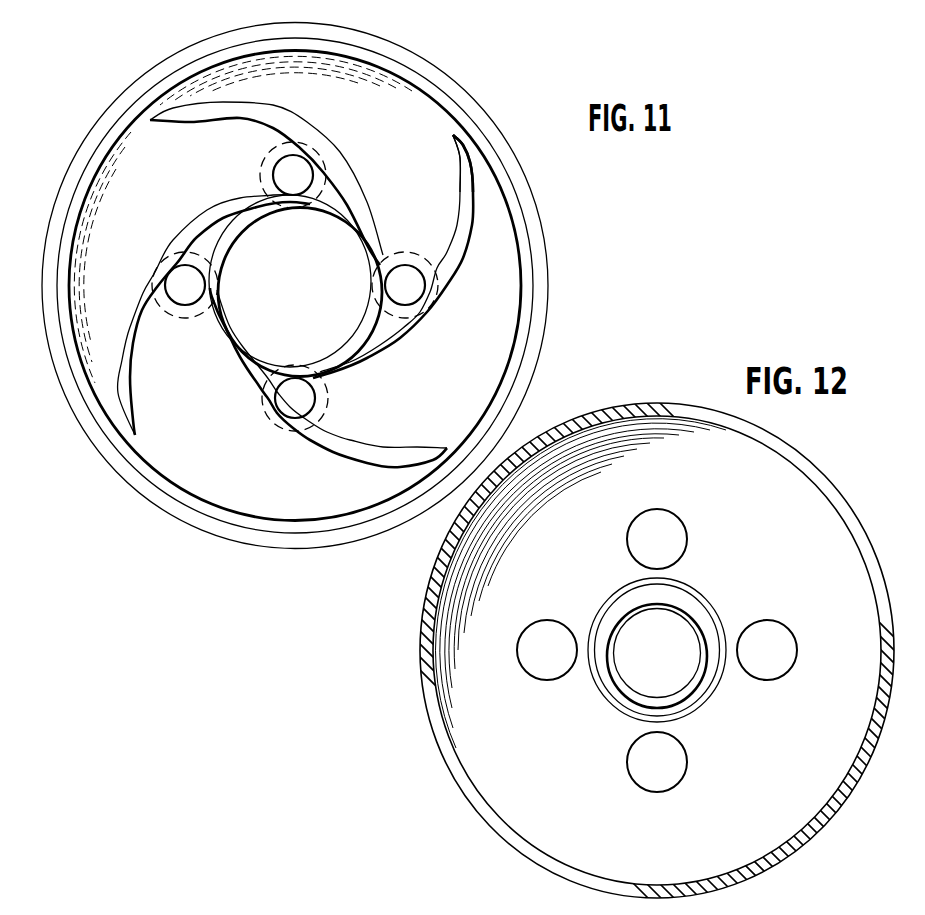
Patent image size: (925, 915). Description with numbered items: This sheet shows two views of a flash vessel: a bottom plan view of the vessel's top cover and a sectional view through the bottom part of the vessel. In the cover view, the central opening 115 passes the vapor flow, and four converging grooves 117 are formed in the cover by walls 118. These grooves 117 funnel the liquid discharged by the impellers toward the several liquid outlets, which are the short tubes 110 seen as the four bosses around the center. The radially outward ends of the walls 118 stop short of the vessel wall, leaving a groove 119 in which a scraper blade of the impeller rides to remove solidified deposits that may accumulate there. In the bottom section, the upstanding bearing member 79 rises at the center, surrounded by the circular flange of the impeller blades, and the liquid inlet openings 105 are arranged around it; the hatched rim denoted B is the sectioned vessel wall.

In FIG. 11, the converging grooves 117 is at (130, 185).
In FIG. 11, the walls 118 is at (270, 122).
In FIG. 11, the groove 119 is at (463, 140).
In FIG. 11, the short tubes 110 is at (293, 177).
In FIG. 11, the opening 115 is at (232, 325).
In FIG. 12, the rim section B is at (803, 452).
In FIG. 12, the liquid inlet opening 105 is at (647, 560).
In FIG. 12, the upstanding bearing member 79 is at (678, 606).